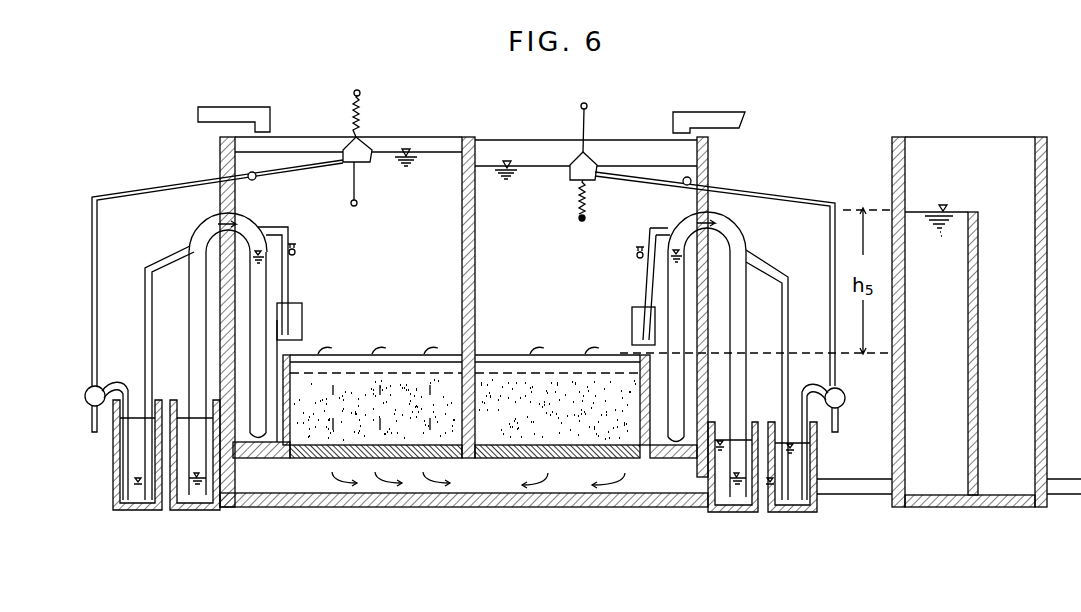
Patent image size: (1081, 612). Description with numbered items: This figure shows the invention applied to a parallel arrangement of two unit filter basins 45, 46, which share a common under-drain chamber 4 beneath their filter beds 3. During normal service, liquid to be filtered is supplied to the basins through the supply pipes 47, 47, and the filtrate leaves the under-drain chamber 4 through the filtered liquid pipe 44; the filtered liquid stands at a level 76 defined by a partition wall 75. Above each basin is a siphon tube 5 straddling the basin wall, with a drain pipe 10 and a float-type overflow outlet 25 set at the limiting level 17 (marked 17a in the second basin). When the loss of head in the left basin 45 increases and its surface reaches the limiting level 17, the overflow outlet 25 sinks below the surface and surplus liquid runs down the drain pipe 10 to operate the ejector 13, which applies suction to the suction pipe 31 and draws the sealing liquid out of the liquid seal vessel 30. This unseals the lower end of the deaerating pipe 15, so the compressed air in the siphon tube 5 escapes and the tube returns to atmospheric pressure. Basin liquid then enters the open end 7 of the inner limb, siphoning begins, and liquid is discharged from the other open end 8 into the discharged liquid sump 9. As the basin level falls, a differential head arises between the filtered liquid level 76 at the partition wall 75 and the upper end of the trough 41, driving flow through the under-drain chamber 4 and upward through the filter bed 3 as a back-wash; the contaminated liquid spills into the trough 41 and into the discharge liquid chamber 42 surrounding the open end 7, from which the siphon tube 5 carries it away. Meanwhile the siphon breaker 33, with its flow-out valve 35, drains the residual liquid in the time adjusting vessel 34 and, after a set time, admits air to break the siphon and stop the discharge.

The filter bed 3 is at (436, 415).
The common under-drain chamber 4 is at (464, 488).
The siphon tube 5 is at (194, 231).
The open end of inner limb of siphon tube 7 is at (258, 416).
The other open end of siphon tube 8 is at (203, 505).
The discharged liquid sump 9 is at (197, 503).
The drain pipe 10 is at (168, 186).
The ejector 13 is at (460, 441).
The deaerating pipe 15 is at (145, 311).
The limiting level 17 is at (288, 152).
The float guide rail 17a is at (538, 166).
The overflow outlet 25 is at (370, 163).
The liquid seal vessel 30 is at (141, 508).
The suction pipe 31 is at (127, 480).
The siphon breaker 33 is at (291, 282).
The time adjusting vessel 34 is at (302, 311).
The valve for adjusting liquid flow-out 35 is at (296, 249).
The trough 41 is at (312, 355).
The discharge liquid chamber 42 is at (270, 445).
The filtered liquid pipe 44 is at (858, 492).
The filter basin 45 is at (414, 273).
The filter basin 46 is at (554, 273).
The supply pipe 47 is at (243, 107).
The partition wall 75 is at (978, 230).
The water level in reservoir 76 is at (920, 212).